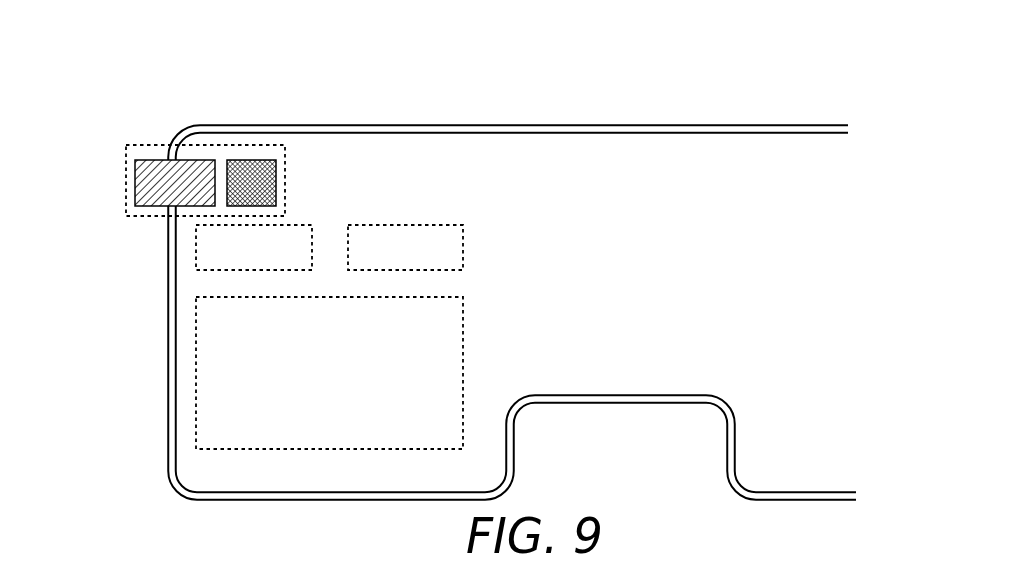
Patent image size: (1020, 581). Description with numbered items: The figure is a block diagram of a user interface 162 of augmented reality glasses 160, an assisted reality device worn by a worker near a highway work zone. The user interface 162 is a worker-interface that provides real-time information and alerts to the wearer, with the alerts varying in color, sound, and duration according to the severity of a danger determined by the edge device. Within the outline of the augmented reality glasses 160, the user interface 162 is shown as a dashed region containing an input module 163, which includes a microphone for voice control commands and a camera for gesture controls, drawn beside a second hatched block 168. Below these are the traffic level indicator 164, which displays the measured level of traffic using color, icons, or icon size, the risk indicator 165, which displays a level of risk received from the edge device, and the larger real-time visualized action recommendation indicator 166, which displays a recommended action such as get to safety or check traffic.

The augmented reality glasses 160 is at (633, 87).
The user interface 162 is at (158, 87).
The input module 163 is at (148, 206).
The traffic level indicator 164 is at (207, 262).
The risk indicator 165 is at (448, 243).
The real-time visualized action recommendation indicator 166 is at (213, 425).
The antenna element (crosshatched) 168 is at (252, 160).